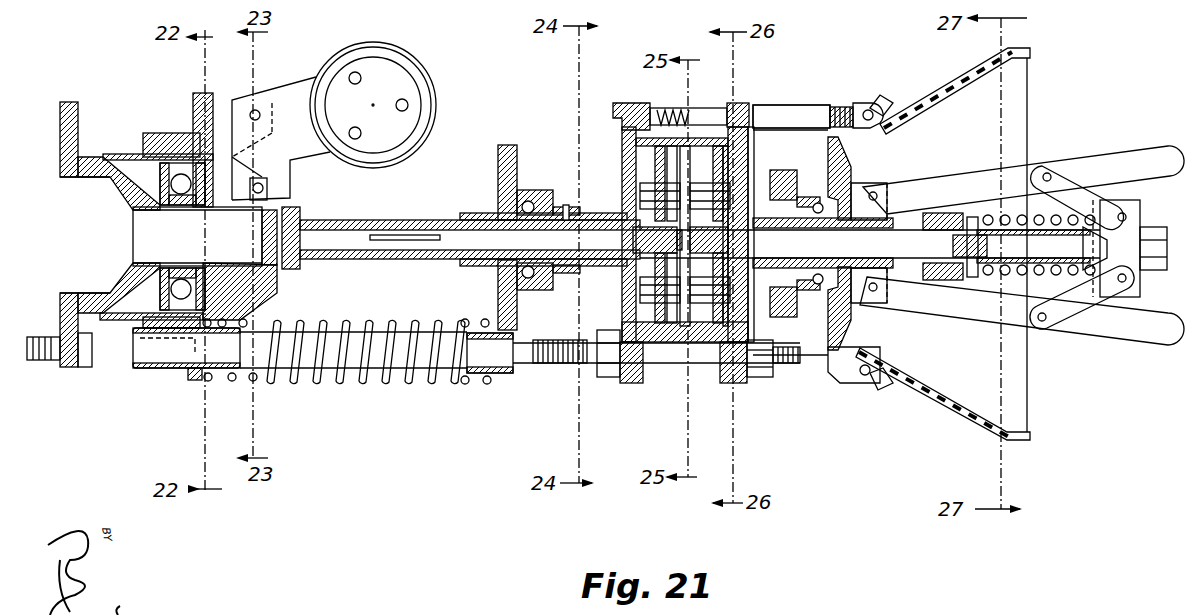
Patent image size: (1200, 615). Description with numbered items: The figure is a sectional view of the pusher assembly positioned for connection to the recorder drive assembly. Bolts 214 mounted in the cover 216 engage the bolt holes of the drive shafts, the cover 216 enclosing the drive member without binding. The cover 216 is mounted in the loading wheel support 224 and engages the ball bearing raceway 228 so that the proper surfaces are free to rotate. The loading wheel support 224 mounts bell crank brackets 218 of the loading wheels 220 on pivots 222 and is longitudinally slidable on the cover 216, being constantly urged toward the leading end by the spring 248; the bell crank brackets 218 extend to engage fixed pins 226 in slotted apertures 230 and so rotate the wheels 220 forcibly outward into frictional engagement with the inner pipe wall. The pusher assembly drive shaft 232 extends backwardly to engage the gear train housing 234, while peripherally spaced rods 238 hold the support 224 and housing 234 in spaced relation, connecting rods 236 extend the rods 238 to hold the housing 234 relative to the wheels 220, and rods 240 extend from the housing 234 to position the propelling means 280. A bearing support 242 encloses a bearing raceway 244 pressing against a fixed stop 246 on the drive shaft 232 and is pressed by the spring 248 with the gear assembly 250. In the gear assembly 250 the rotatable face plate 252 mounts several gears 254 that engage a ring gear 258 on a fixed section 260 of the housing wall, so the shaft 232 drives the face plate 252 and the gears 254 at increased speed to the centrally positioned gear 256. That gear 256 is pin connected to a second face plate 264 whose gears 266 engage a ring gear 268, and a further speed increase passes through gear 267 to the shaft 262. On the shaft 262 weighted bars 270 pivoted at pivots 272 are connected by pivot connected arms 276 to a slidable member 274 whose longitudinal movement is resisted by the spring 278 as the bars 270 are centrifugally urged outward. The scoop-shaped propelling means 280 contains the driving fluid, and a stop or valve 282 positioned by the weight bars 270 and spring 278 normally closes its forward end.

The bolts 214 is at (43, 362).
The cover 216 is at (78, 103).
The bell crank brackets 218 is at (287, 100).
The loading wheels 220 is at (400, 82).
The pivots 222 is at (253, 112).
The loading wheel support 224 is at (168, 135).
The fixed pins 226 is at (263, 190).
The ball bearing raceway 228 is at (180, 300).
The slotted apertures 230 is at (267, 180).
The pusher assembly drive shaft 232 is at (383, 220).
The gear train housing 234 is at (613, 110).
The connecting rods 236 is at (640, 355).
The peripherally spaced rods 238 is at (447, 345).
The rods 240 is at (807, 107).
The bearing support 242 is at (505, 143).
The bearing raceway 244 is at (528, 200).
The fixed stop 246 is at (566, 208).
The spring 248 is at (443, 337).
The gear assembly 250 is at (627, 308).
The rotatable face plate 252 is at (660, 185).
The gears 254 is at (670, 338).
The centrally positioned gear 256 is at (655, 263).
The ring gear 258 is at (677, 343).
The fixed section 260 is at (692, 343).
The shaft 262 is at (745, 293).
The face plate 264 is at (710, 187).
The gears 266 is at (755, 167).
The gear 267 is at (753, 235).
The ring gear 268 is at (752, 127).
The weighted bars 270 is at (1133, 132).
The pivots 272 is at (873, 193).
The slidable member 274 is at (1135, 223).
The pivot connected arms 276 is at (1105, 288).
The spring 278 is at (1063, 282).
The propelling means 280 is at (947, 412).
The stop or valve 282 is at (830, 150).